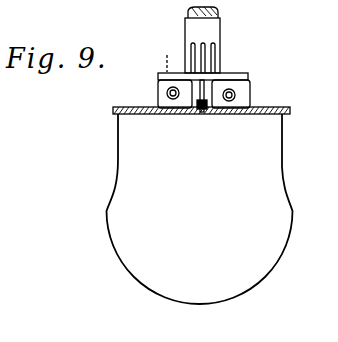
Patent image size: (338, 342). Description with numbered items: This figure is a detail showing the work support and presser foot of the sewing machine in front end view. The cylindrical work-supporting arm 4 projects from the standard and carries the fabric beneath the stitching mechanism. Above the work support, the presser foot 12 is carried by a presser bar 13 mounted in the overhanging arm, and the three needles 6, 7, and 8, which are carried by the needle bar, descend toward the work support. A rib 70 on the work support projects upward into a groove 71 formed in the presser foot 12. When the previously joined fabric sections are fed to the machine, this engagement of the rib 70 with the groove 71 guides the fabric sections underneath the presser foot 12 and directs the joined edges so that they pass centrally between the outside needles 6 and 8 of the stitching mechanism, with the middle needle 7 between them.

The work-supporting arm 4 is at (271, 137).
The presser bar 13 is at (188, 12).
The needle 6 is at (191, 50).
The needle 7 is at (206, 43).
The needle 8 is at (216, 52).
The presser foot 12 is at (243, 84).
The groove 71 is at (158, 100).
The rib 70 is at (203, 110).